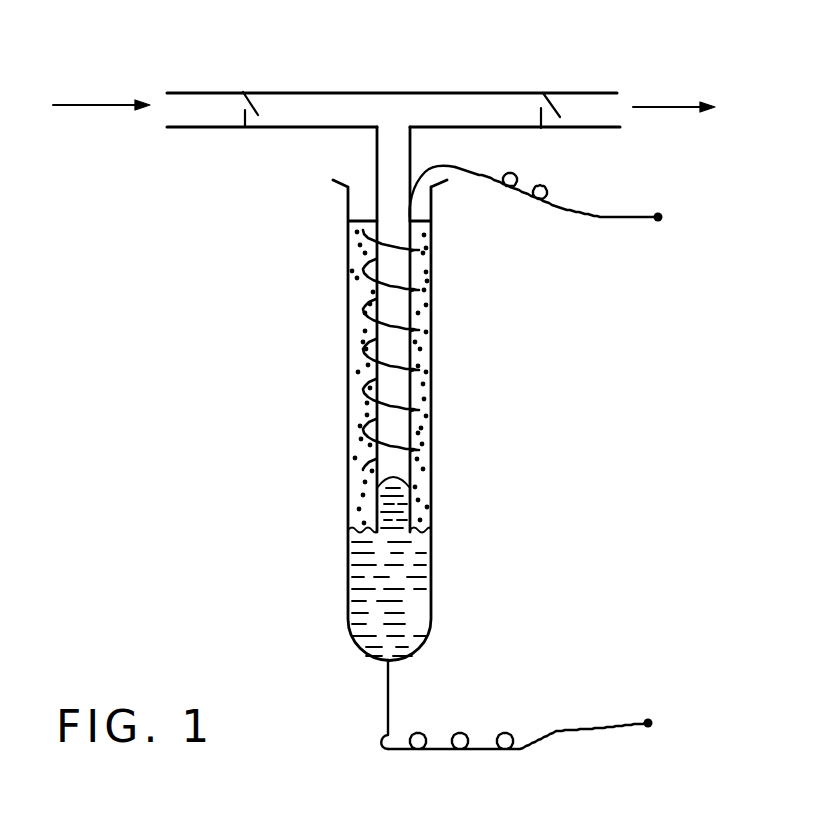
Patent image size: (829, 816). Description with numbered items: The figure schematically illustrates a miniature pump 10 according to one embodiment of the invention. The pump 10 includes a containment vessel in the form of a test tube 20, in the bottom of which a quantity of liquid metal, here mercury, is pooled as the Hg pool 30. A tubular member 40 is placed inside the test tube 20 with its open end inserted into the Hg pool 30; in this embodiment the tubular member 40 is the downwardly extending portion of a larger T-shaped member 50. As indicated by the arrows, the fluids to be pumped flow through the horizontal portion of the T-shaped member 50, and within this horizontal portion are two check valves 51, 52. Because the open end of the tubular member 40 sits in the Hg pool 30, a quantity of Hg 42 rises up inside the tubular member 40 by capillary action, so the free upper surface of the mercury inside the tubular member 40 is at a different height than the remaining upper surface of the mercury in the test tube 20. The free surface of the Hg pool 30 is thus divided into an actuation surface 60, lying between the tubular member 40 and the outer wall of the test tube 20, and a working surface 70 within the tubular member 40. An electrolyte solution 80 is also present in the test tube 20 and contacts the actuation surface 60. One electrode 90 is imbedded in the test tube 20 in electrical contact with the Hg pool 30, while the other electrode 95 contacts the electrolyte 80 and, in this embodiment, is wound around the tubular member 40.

The miniature pump 10 is at (489, 438).
The test tube 20 is at (431, 358).
The Hg pool 30 is at (350, 600).
The tubular member 40 is at (377, 162).
The quantity of Hg 42 is at (348, 516).
The T-shaped member 50 is at (490, 93).
The check valve 51 is at (245, 92).
The check valve 52 is at (545, 95).
The actuation surface 60 is at (431, 526).
The working surface 70 is at (396, 477).
The electrolyte solution 80 is at (352, 388).
The electrode 90 is at (648, 723).
The electrode 95 is at (618, 217).